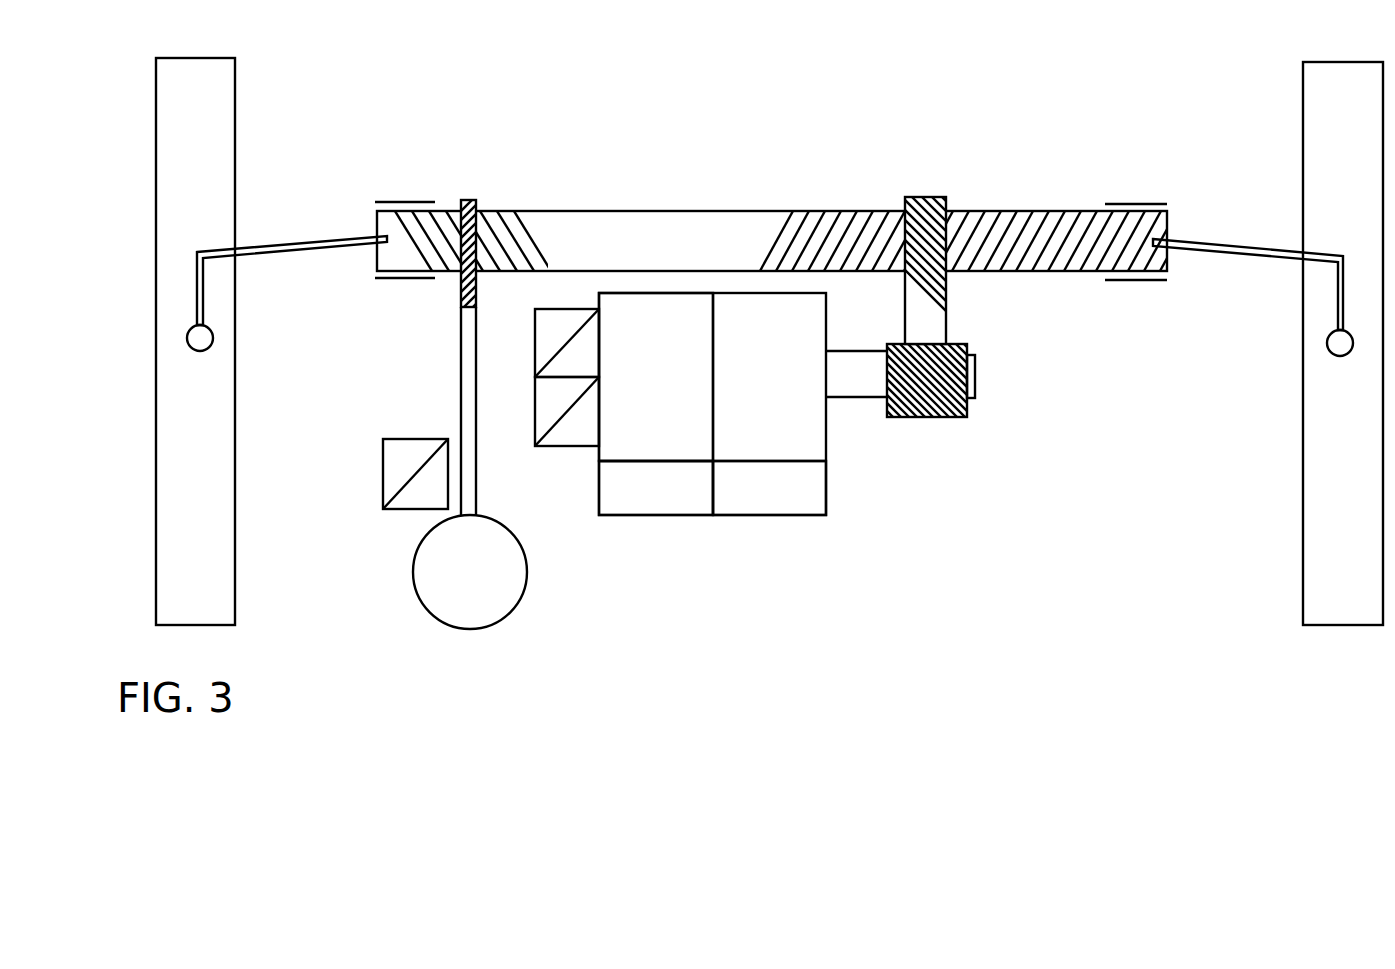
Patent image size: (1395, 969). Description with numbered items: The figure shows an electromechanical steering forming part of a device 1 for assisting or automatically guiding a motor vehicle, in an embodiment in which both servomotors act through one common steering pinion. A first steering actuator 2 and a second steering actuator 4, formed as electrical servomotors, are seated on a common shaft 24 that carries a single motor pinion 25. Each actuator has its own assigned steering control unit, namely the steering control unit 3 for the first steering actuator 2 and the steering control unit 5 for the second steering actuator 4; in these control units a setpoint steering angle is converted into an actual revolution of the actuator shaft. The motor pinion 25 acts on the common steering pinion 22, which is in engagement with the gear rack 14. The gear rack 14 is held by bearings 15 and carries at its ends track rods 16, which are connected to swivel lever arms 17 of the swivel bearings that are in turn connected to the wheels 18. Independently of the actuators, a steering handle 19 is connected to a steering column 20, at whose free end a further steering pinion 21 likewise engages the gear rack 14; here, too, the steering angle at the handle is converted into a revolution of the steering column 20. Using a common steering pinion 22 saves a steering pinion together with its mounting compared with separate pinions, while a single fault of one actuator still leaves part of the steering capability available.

The device 1 is at (722, 144).
The first steering actuator 2 is at (816, 438).
The steering control unit 3 is at (815, 498).
The second steering actuator 4 is at (666, 448).
The steering control unit 5 is at (627, 497).
The gear rack 14 is at (550, 227).
The bearings 15 is at (411, 202).
The track rods 16 is at (316, 240).
The swivel lever arms 17 is at (201, 298).
The wheels 18 is at (206, 414).
The steering handle 19 is at (508, 593).
The steering column 20 is at (470, 358).
The further steering pinion 21 is at (468, 210).
The common steering pinion 22 is at (930, 217).
The common shaft 24 is at (853, 389).
The motor pinion 25 is at (950, 352).